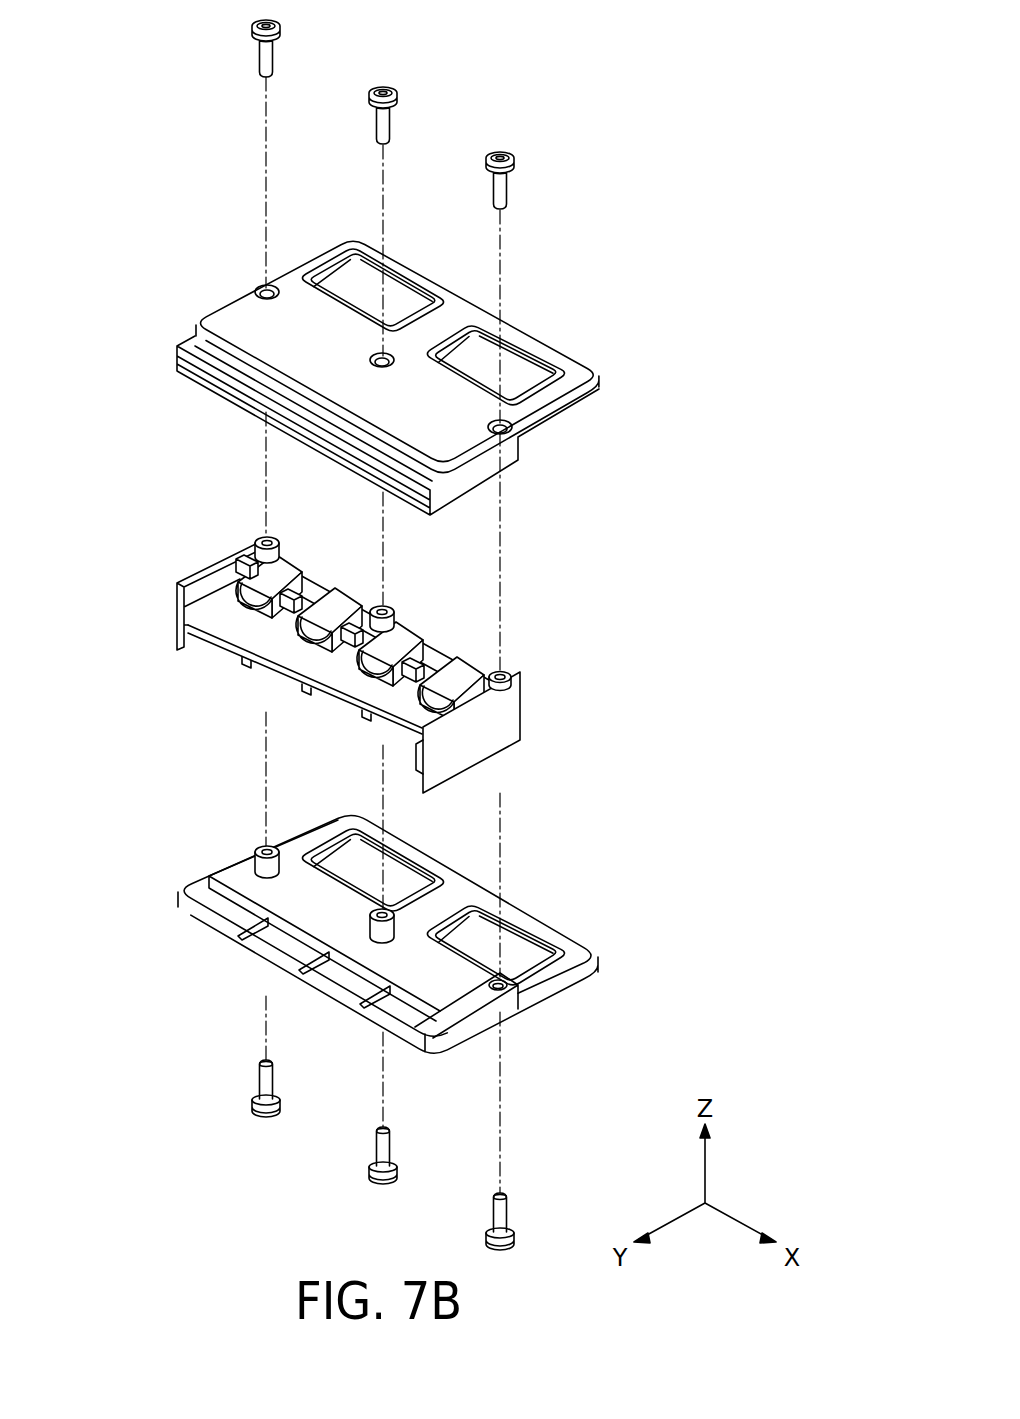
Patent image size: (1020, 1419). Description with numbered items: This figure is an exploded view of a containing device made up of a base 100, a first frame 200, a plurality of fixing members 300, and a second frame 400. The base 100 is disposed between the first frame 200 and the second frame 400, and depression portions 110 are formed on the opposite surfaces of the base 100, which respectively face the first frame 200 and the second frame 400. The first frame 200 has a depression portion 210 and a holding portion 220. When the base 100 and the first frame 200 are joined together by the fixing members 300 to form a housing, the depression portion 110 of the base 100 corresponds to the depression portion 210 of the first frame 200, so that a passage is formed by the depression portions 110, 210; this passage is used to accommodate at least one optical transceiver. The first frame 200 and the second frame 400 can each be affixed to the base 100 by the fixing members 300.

The base 100 is at (337, 665).
The depression portion 110 is at (215, 612).
The first frame 200 is at (387, 378).
The depression portion 210 is at (215, 384).
The holding portion 220 is at (575, 364).
The fixing member 300 is at (263, 61).
The second frame 400 is at (503, 1017).